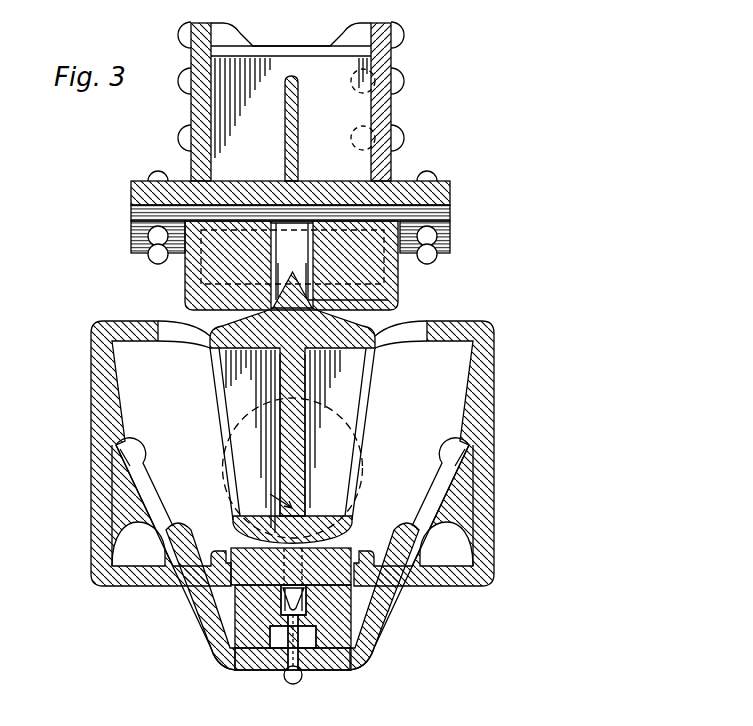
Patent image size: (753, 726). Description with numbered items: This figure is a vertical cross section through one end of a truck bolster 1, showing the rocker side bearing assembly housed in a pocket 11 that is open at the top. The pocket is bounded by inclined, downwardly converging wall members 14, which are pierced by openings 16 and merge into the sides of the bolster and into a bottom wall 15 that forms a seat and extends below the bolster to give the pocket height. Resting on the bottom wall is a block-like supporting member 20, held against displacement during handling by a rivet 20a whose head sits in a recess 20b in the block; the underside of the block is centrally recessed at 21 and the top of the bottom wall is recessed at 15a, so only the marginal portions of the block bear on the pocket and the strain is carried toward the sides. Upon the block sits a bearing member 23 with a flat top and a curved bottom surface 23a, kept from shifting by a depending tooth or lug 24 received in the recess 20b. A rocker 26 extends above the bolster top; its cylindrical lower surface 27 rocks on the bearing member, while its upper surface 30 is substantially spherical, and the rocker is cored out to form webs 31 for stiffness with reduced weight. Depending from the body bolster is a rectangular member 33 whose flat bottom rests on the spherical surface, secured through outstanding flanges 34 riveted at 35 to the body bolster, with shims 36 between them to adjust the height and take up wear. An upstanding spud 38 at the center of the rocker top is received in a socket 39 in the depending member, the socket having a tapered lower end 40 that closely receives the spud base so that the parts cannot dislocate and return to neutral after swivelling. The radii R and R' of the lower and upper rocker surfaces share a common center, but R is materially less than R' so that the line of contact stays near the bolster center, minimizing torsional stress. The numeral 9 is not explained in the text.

The truck bolster 1 is at (482, 312).
The spring housing 9 is at (386, 160).
The pocket 11 is at (292, 506).
The inclined wall members 14 is at (126, 444).
The bottom wall 15 is at (238, 663).
The recess in bottom wall 15a is at (320, 663).
The openings 16 is at (148, 487).
The supporting member 20 is at (362, 626).
The rivet 20a is at (286, 676).
The recess 20b is at (305, 600).
The central recess 21 is at (270, 648).
The bearing member 23 is at (312, 540).
The curved bottom surface 23a is at (335, 577).
The depending tooth or lug 24 is at (283, 592).
The rocker 26 is at (270, 346).
The cylindrical lower surface 27 is at (245, 531).
The upper surface 30 is at (345, 311).
The webs 31 is at (222, 404).
The depending member 33 is at (392, 276).
The outstanding flanges 34 is at (445, 247).
The rivets 35 is at (440, 226).
The shims 36 is at (442, 203).
The spud 38 is at (272, 285).
The socket 39 is at (270, 248).
The tapered lower end 40 is at (380, 290).
The radius R is at (273, 490).
The radius R' is at (293, 454).